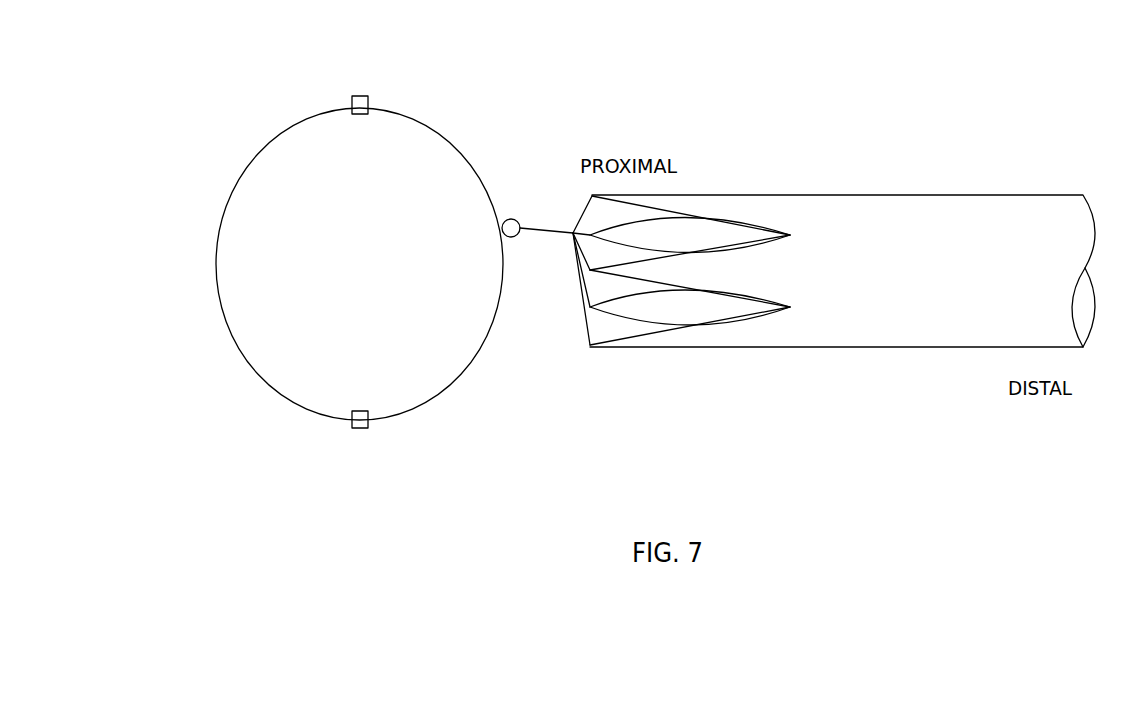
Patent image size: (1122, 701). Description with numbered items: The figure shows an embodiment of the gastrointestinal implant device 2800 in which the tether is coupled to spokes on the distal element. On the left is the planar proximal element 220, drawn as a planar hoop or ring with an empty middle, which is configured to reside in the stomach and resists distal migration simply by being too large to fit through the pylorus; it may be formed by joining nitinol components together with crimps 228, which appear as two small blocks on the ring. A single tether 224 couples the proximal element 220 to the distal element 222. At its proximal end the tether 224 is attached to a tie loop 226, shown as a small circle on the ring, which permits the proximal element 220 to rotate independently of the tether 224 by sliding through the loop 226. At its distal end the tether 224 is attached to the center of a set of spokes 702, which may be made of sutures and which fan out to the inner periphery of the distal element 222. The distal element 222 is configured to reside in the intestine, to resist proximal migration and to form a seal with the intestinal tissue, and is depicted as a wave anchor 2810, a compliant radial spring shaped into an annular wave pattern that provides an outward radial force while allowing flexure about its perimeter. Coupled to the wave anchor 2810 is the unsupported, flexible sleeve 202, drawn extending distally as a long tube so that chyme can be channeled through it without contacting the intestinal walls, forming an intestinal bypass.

The sleeve 202 is at (888, 195).
The planar proximal element 220 is at (405, 110).
The distal element 222 is at (793, 167).
The tether 224 is at (557, 237).
The tie loop 226 is at (512, 219).
The crimps 228 is at (358, 95).
The spokes 702 is at (581, 200).
The gastrointestinal implant device 2800 is at (801, 256).
The wave anchor 2810 is at (588, 345).